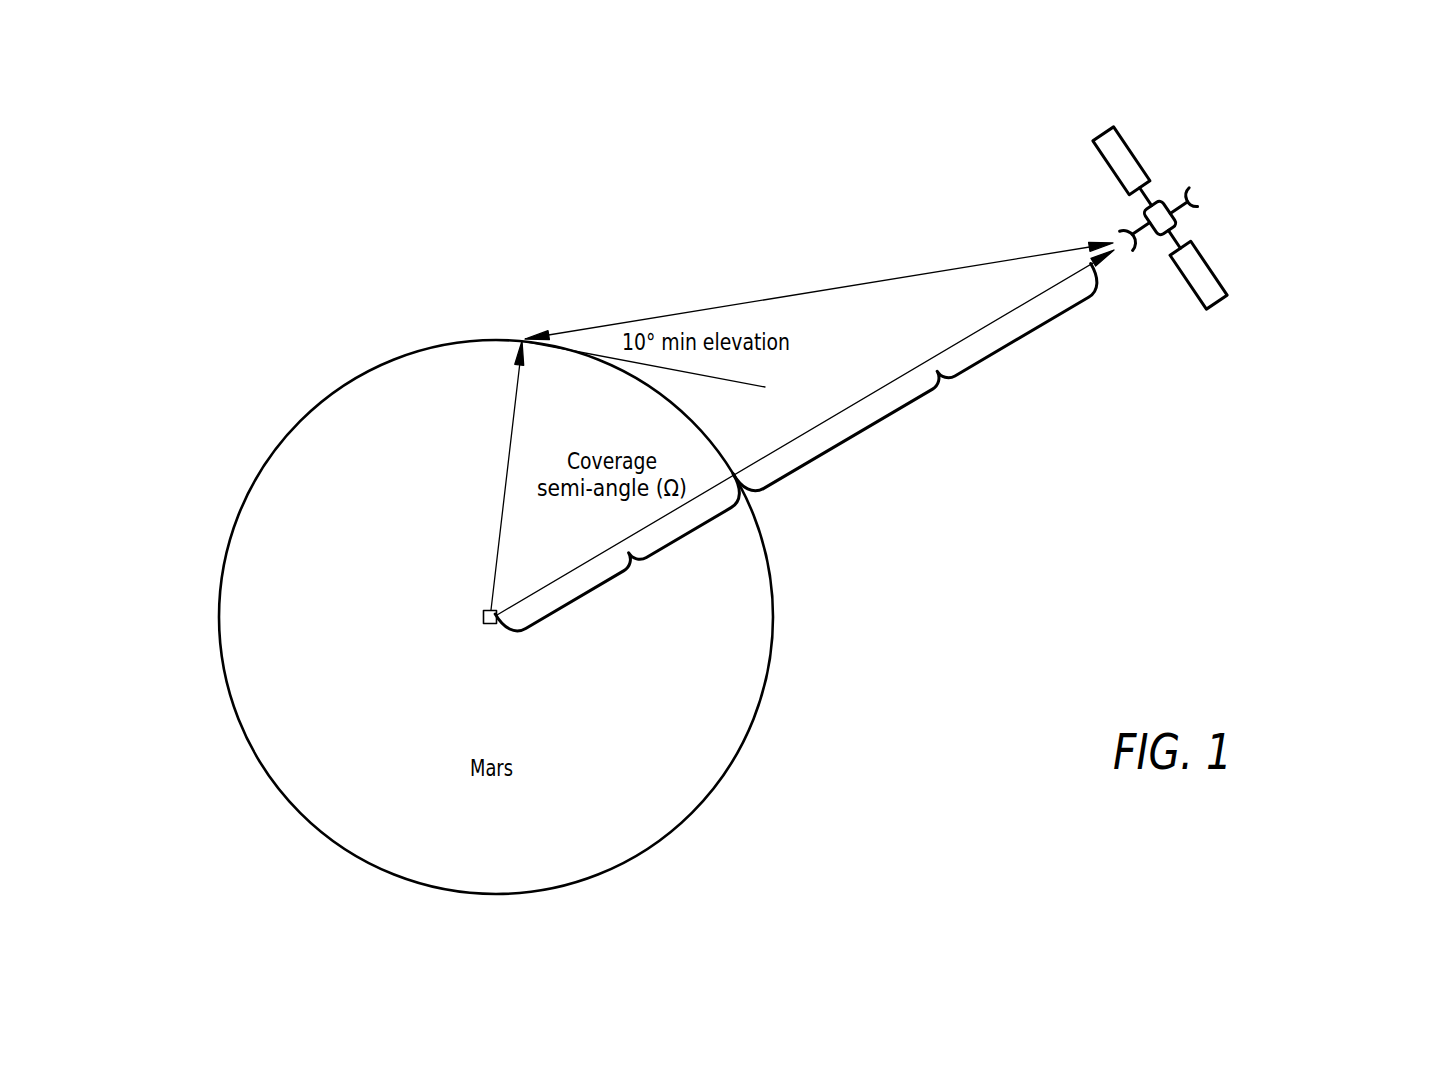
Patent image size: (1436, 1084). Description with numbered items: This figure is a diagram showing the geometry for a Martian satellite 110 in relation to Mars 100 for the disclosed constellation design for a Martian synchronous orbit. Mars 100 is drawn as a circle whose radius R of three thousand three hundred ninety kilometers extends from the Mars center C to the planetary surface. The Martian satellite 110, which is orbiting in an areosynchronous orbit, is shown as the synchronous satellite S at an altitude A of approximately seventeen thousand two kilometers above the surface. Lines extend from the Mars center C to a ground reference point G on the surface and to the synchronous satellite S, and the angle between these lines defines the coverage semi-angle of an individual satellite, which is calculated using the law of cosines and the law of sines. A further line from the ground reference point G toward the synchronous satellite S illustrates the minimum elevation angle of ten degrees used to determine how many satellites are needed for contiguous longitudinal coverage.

The Mars 100 is at (496, 617).
The Martian satellite 110 is at (1162, 199).
The synchronous satellite S is at (1211, 211).
The ground reference point G is at (507, 328).
The Mars center C is at (432, 620).
The radius R is at (621, 560).
The altitude A is at (919, 381).